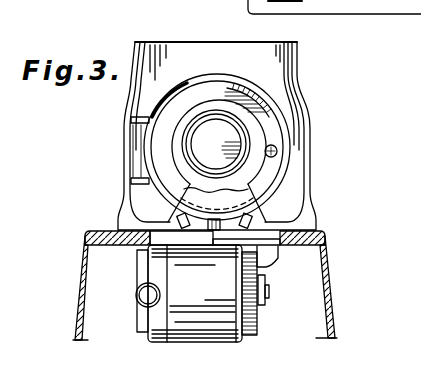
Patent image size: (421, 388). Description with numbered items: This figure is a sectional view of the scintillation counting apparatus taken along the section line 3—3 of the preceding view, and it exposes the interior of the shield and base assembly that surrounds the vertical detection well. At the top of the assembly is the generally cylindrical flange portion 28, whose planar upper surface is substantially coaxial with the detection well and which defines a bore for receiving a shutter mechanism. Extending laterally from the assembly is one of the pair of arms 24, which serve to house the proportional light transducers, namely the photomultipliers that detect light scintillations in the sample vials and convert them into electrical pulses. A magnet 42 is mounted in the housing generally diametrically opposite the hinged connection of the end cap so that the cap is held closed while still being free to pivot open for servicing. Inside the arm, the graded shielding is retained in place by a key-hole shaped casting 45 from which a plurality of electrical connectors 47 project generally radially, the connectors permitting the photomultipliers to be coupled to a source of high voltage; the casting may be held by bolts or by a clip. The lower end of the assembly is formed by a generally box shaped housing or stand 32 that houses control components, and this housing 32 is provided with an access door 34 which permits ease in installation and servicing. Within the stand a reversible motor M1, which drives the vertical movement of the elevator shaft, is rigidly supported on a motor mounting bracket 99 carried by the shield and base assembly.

The section line 3— 3 is at (285, 3).
The laterally extending arm 24 is at (285, 112).
The cylindrical flange portion 28 is at (196, 53).
The magnet 42 is at (278, 150).
The key-hole shaped casting 45 is at (240, 183).
The electrical connectors 47 is at (275, 222).
The housing or stand 32 is at (80, 279).
The access door 34 is at (331, 293).
The reversible motor M1 is at (147, 333).
The motor mounting bracket 99 is at (252, 335).